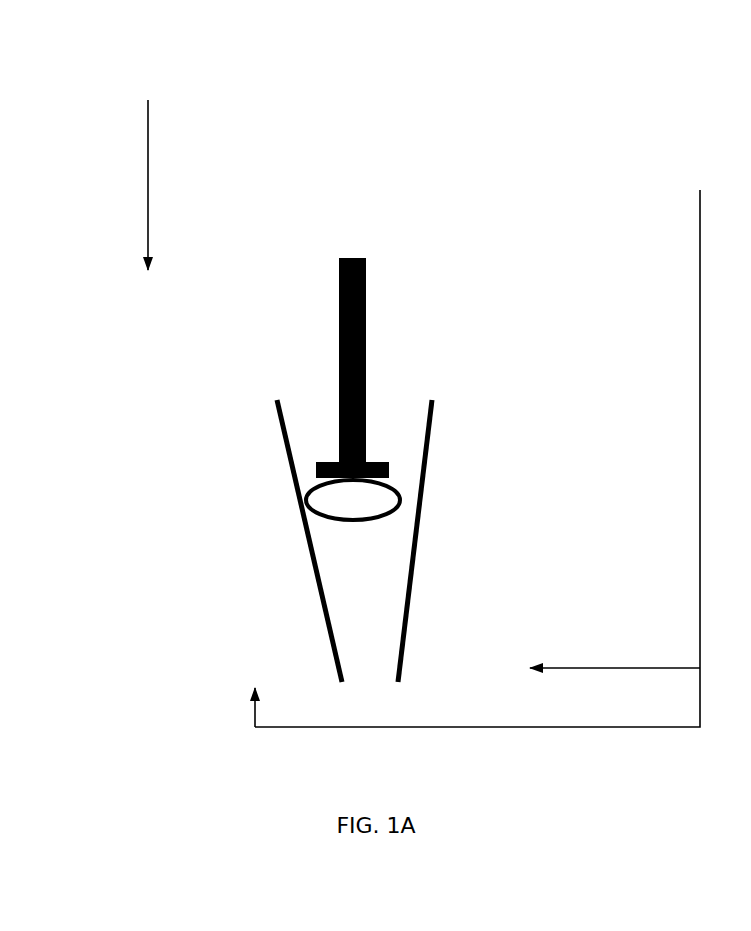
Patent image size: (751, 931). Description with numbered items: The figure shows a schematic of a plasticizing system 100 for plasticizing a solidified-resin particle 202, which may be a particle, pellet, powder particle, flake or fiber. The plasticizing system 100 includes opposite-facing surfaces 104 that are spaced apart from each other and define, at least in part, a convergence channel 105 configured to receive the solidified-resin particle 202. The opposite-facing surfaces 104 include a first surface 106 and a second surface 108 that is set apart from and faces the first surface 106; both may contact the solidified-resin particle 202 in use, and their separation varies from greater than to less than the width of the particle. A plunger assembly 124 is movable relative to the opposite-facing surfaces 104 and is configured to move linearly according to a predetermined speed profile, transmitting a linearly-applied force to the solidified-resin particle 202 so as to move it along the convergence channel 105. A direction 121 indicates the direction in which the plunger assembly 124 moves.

The plasticizing system 100 is at (500, 145).
The opposite-facing surfaces 104 is at (487, 441).
The convergence channel 105 is at (316, 410).
The first surface 106 is at (323, 620).
The second surface 108 is at (405, 620).
The direction 121 is at (147, 145).
The plunger assembly 124 is at (352, 258).
The solidified-resin particle 202 is at (400, 498).